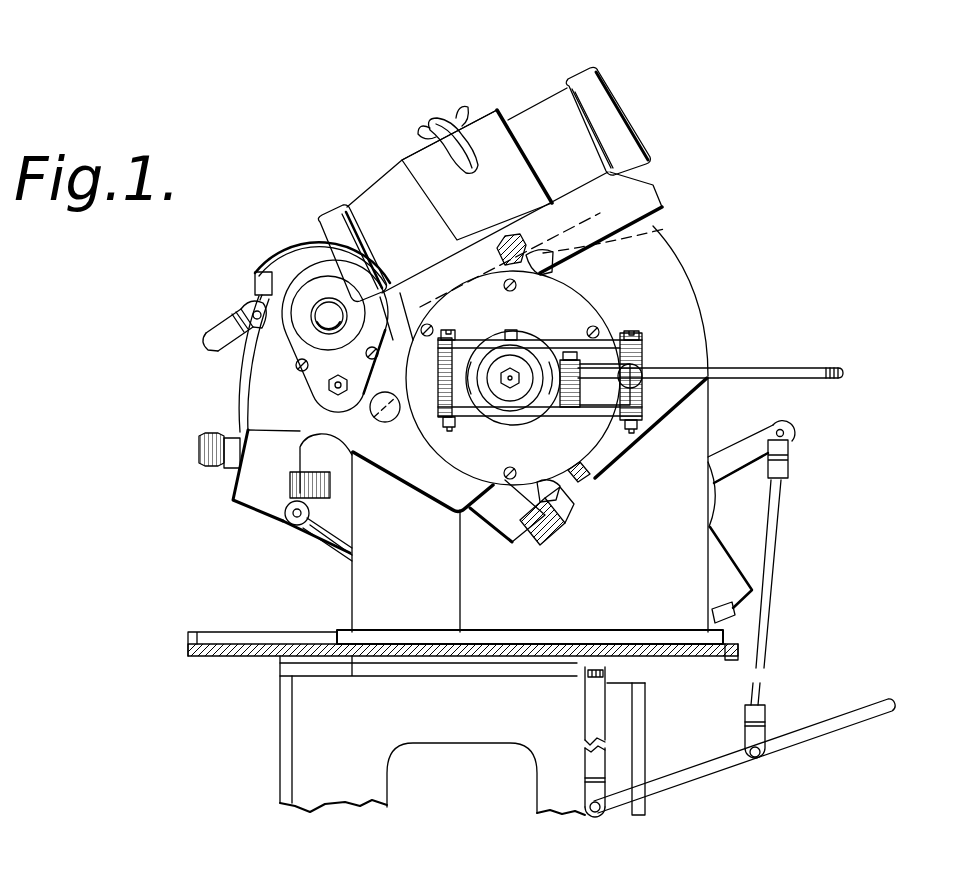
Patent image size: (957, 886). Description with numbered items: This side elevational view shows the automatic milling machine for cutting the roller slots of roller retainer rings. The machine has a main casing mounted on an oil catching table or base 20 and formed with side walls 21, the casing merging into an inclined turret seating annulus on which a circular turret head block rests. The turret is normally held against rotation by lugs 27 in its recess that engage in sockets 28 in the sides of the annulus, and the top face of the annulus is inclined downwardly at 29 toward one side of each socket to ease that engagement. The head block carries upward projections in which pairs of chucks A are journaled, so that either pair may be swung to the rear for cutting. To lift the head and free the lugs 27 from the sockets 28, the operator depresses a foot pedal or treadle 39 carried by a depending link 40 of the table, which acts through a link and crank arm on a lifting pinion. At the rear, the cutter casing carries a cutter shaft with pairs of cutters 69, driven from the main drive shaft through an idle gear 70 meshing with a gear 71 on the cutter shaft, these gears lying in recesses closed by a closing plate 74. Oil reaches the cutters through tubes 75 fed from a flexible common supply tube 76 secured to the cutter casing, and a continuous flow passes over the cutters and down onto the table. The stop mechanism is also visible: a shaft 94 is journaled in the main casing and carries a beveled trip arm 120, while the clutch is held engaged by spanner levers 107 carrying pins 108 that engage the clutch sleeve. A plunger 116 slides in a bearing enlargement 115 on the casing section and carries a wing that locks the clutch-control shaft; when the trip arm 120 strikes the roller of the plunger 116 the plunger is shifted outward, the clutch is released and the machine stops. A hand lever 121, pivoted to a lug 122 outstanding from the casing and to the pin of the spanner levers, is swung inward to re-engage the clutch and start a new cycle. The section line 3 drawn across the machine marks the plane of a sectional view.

The chucks A is at (585, 83).
The section line 3- 3 is at (320, 426).
The oil catching table or base 20 is at (240, 640).
The side walls 21 is at (547, 505).
The lugs 27 is at (528, 250).
The sockets 28 is at (555, 272).
The inclined portion of annulus top face 29 is at (564, 274).
The foot pedal 39 is at (672, 770).
The depending link 40 is at (597, 705).
The cutters 69 is at (397, 430).
The idle gear 70 is at (300, 397).
The gear 71 is at (297, 335).
The closing plate 74 is at (313, 274).
The tubes 75 is at (283, 252).
The flexible common supply tube 76 is at (223, 330).
The shaft 94 is at (558, 520).
The spanner levers 107 is at (498, 410).
The pins 108 is at (509, 342).
The bearing enlargement 115 is at (670, 386).
The plunger 116 is at (590, 480).
The trip arm 120 is at (556, 491).
The hand lever 121 is at (763, 367).
The lug 122 is at (590, 402).